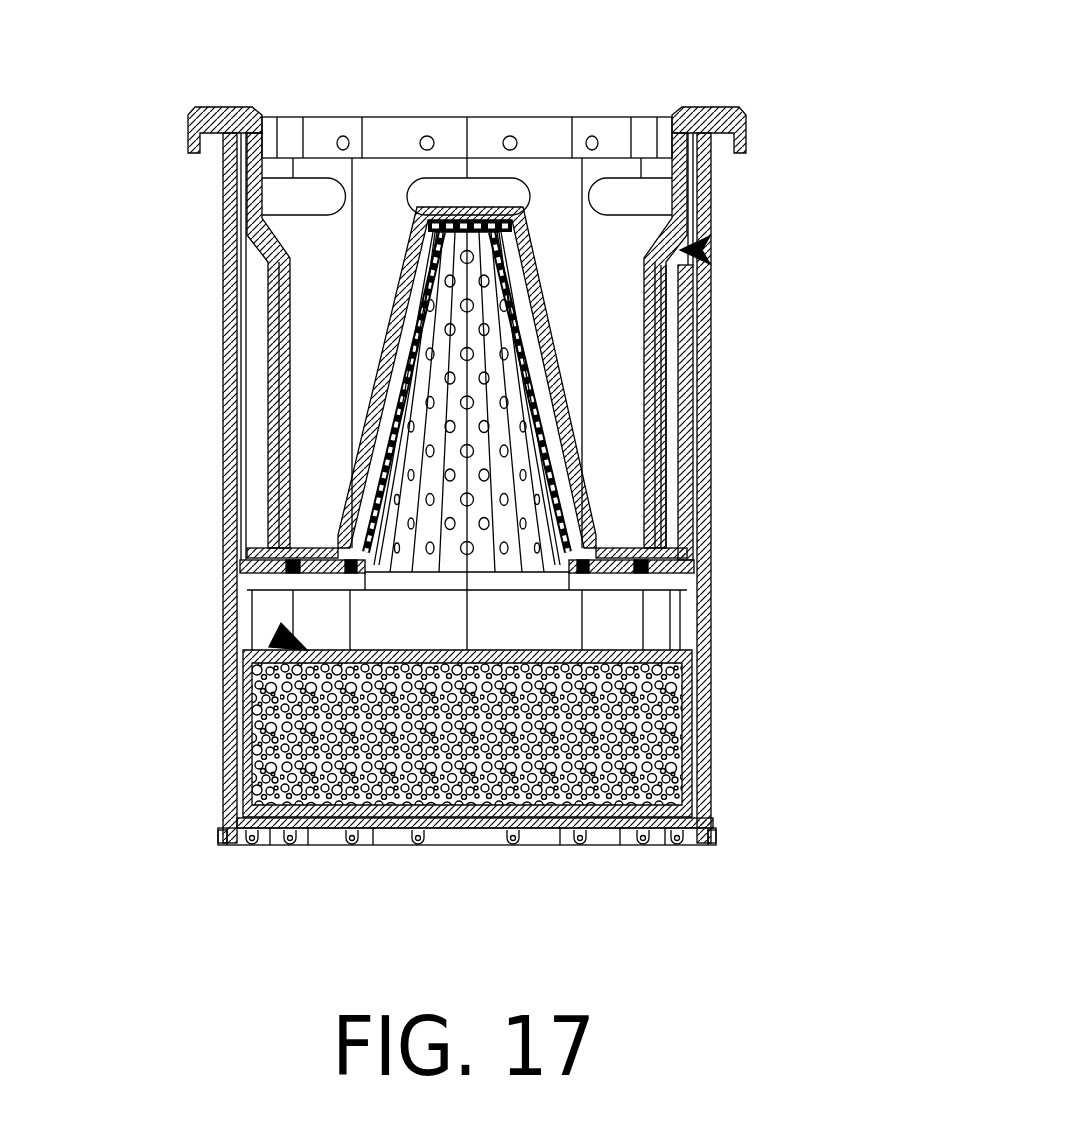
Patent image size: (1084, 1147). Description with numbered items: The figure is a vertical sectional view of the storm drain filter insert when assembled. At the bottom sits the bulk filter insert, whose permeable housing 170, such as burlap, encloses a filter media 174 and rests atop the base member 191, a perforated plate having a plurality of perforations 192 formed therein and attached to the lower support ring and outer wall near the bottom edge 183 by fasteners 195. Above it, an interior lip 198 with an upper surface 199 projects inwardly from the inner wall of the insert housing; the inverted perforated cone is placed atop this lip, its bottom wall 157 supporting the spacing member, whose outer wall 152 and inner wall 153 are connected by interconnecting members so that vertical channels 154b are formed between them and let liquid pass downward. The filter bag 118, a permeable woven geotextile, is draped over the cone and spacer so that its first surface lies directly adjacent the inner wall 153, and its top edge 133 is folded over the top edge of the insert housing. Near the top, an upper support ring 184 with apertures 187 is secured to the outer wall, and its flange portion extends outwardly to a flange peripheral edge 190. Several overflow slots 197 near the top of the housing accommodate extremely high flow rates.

The filter bag 118 is at (710, 250).
The top edge 133 is at (744, 150).
The outer wall 152 is at (680, 395).
The inner wall 153 is at (673, 367).
The vertical channels 154b is at (285, 307).
The bottom wall 157 is at (285, 585).
The permeable housing 170 is at (290, 640).
The granular filter media 174 is at (630, 753).
The bottom edge 183 is at (232, 846).
The upper support ring 184 is at (393, 117).
The apertures 187 is at (511, 136).
The flange peripheral edge 190 is at (747, 122).
The base member 191 is at (374, 848).
The perforations 192 is at (613, 848).
The fasteners 195 is at (714, 831).
The overflow slots 197 is at (622, 178).
The interior lip 198 is at (692, 580).
The upper surface 199 is at (692, 568).